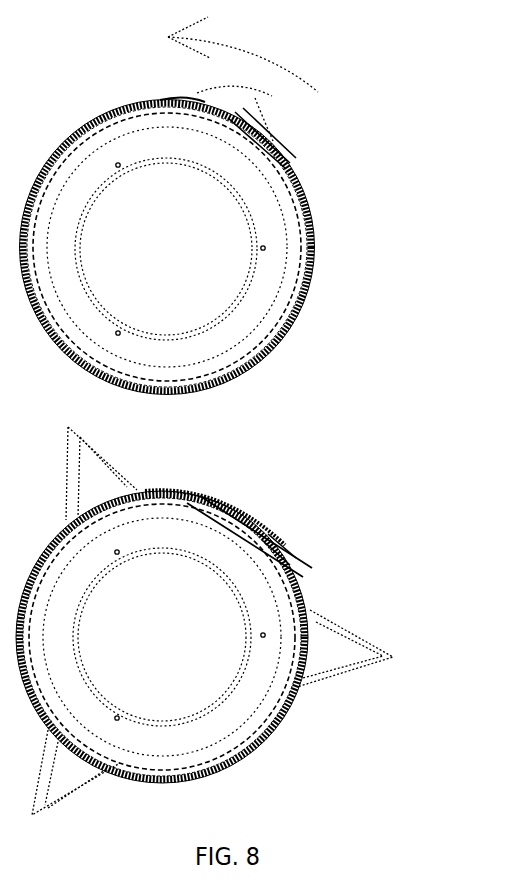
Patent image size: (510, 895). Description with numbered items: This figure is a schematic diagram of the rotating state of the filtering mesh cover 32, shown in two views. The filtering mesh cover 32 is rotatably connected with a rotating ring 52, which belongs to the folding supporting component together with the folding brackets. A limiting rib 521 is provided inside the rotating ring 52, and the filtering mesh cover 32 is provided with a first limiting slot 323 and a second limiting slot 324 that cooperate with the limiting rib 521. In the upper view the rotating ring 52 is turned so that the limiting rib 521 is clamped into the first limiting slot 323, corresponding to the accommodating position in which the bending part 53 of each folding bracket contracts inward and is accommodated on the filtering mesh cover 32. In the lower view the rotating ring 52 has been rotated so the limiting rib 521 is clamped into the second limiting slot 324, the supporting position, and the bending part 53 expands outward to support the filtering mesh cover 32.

The filtering mesh cover 32 is at (270, 233).
The first limiting slot 323 is at (268, 171).
The second limiting slot 324 is at (172, 114).
The rotating ring 52 is at (288, 330).
The limiting rib 521 is at (280, 163).
The bending part 53 is at (393, 657).